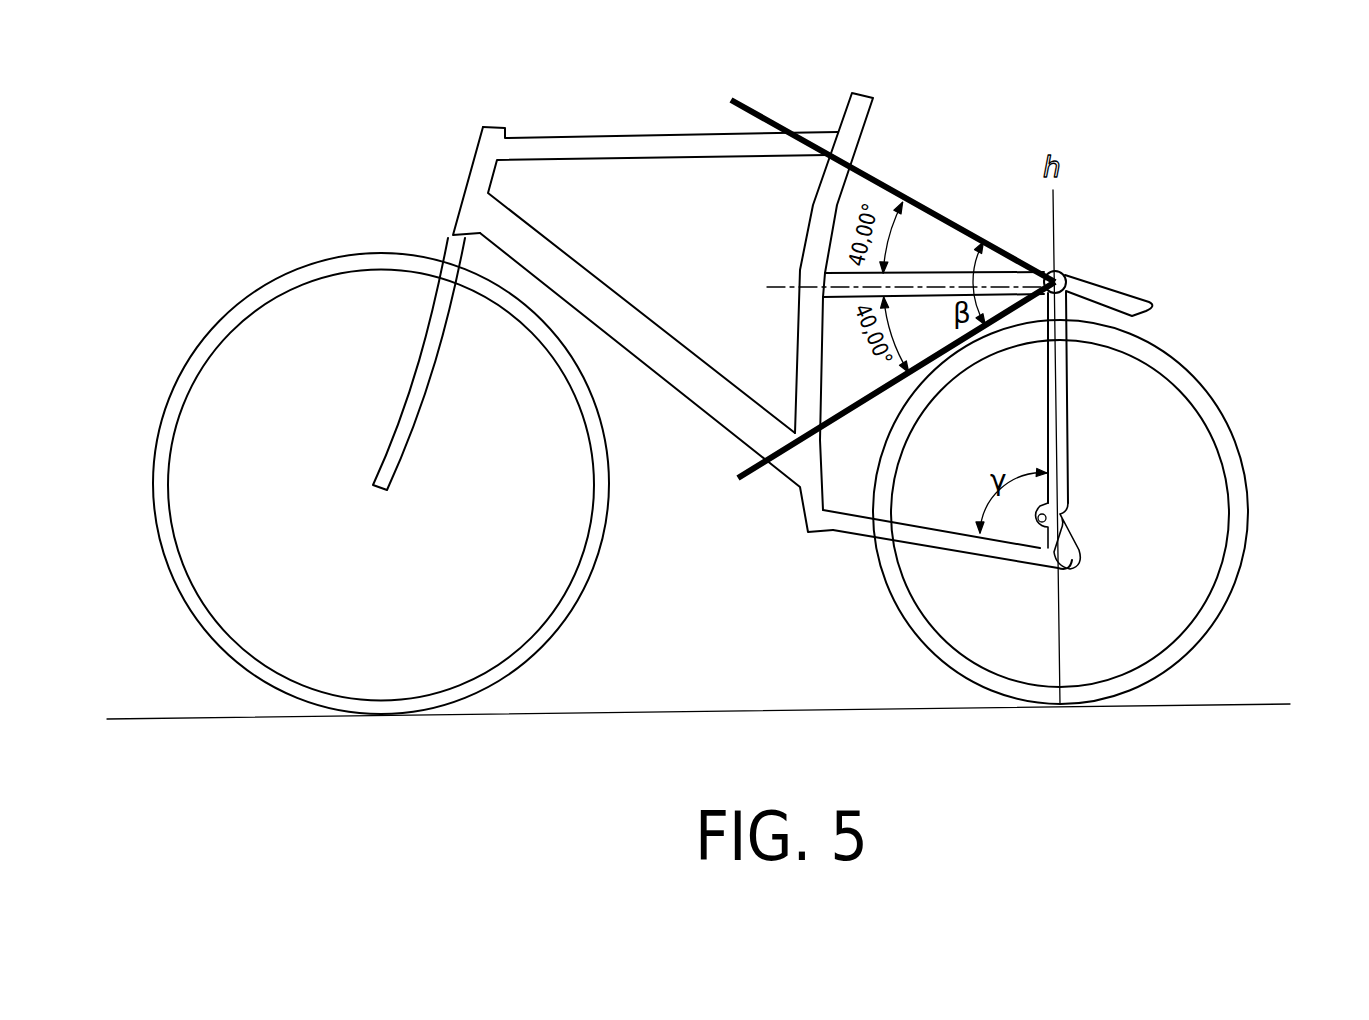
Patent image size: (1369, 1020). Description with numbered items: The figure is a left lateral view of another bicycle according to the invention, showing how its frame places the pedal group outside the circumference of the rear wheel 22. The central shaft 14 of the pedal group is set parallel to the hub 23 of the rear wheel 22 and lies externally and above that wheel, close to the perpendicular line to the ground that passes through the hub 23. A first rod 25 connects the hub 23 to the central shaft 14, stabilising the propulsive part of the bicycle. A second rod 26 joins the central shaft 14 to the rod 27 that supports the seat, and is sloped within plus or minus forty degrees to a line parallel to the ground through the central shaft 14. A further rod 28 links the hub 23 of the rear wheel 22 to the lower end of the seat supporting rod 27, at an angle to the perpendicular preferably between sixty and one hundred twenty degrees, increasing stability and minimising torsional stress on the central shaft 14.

The central shaft of the pedal group 14 is at (1070, 277).
The rear wheel 22 is at (1238, 522).
The hub of the rear wheel 23 is at (1070, 517).
The first rod 25 is at (1063, 412).
The second rod 26 is at (952, 290).
The seat supporting rod 27 is at (820, 235).
The further rod 28 is at (918, 538).